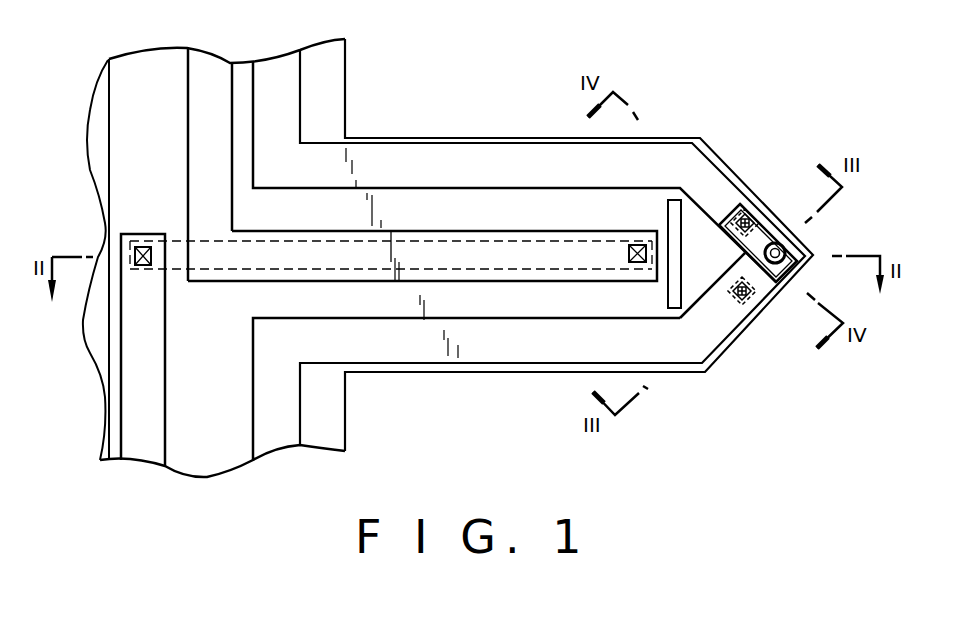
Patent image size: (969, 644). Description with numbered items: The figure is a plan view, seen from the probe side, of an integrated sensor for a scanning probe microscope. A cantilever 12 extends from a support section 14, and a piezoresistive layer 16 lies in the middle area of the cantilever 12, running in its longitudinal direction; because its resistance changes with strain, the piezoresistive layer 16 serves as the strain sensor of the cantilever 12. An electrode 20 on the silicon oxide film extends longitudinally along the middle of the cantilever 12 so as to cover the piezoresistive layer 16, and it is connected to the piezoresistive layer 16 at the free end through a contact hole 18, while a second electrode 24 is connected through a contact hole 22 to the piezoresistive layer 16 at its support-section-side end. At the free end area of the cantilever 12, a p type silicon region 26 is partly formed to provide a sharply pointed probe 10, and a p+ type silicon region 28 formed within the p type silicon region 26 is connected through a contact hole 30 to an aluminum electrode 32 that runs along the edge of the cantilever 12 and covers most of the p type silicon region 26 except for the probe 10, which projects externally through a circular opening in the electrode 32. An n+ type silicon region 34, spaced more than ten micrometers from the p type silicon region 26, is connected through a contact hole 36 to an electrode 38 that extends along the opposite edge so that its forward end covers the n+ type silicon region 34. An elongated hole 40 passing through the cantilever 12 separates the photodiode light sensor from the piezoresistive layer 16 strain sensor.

The probe 10 is at (803, 247).
The cantilever 12 is at (506, 374).
The support section 14 is at (333, 426).
The piezoresistive layer 16 is at (233, 272).
The contact hole 18 is at (636, 246).
The electrode 20 is at (197, 98).
The contact hole 22 is at (143, 247).
The electrode 24 is at (152, 436).
The p type silicon region 26 is at (785, 232).
The p+ type silicon region 28 is at (757, 200).
The contact hole 30 is at (728, 250).
The electrode 32 is at (685, 160).
The n+ type silicon region 34 is at (769, 290).
The contact hole 36 is at (734, 303).
The electrode 38 is at (678, 350).
The elongated hole 40 is at (676, 234).